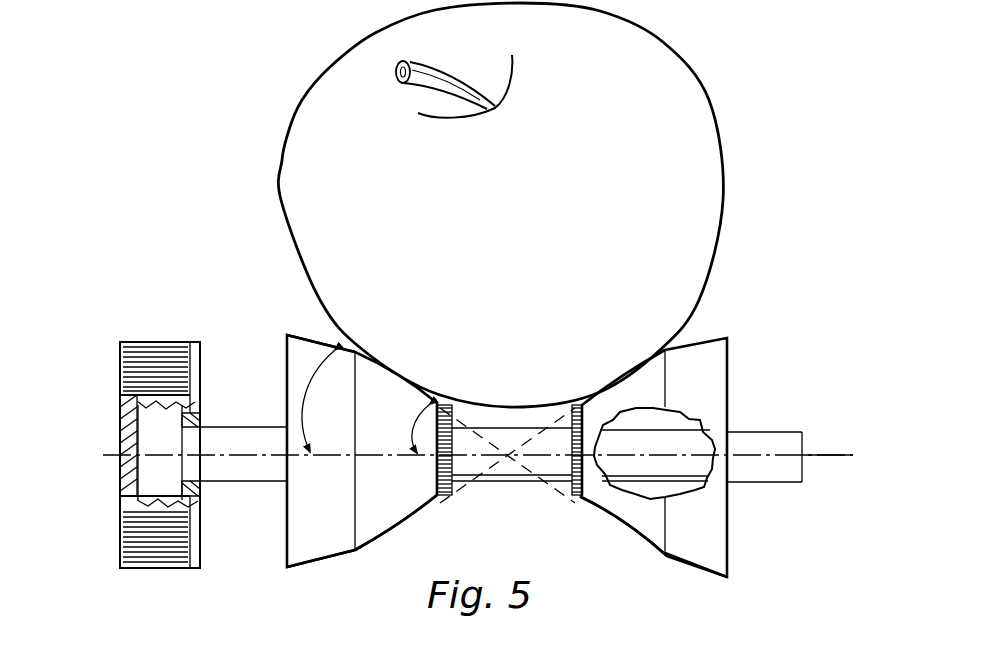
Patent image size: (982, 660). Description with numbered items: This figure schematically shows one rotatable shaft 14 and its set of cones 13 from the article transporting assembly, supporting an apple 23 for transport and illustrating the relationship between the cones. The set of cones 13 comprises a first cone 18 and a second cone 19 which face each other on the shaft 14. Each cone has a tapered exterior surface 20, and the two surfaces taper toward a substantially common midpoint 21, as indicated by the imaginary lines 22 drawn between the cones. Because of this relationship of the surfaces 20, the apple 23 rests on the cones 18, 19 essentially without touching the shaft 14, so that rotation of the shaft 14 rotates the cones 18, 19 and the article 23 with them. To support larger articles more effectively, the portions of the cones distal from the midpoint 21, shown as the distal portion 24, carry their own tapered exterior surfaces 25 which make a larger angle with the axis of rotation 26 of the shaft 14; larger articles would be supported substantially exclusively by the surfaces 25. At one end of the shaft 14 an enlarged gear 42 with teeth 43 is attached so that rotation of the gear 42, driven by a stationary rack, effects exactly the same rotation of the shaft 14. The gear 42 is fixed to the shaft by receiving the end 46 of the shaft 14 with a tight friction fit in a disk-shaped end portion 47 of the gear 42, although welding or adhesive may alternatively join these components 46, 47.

The set of cones 13 is at (765, 303).
The rotatable shaft 14 is at (770, 470).
The first cone 18 is at (640, 556).
The second cone 19 is at (354, 471).
The tapered exterior surface 20 is at (402, 531).
The substantially common midpoint 21 is at (500, 462).
The imaginary lines 22 is at (540, 397).
The apple 23 is at (636, 80).
The distal portion 24 is at (290, 333).
The tapered exterior surface of distal portion 25 is at (305, 566).
The axis of rotation 26 is at (815, 455).
The gear 42 is at (150, 401).
The teeth 43 is at (140, 518).
The end of the shaft 46 is at (133, 440).
The disk-shaped end portion 47 is at (197, 490).